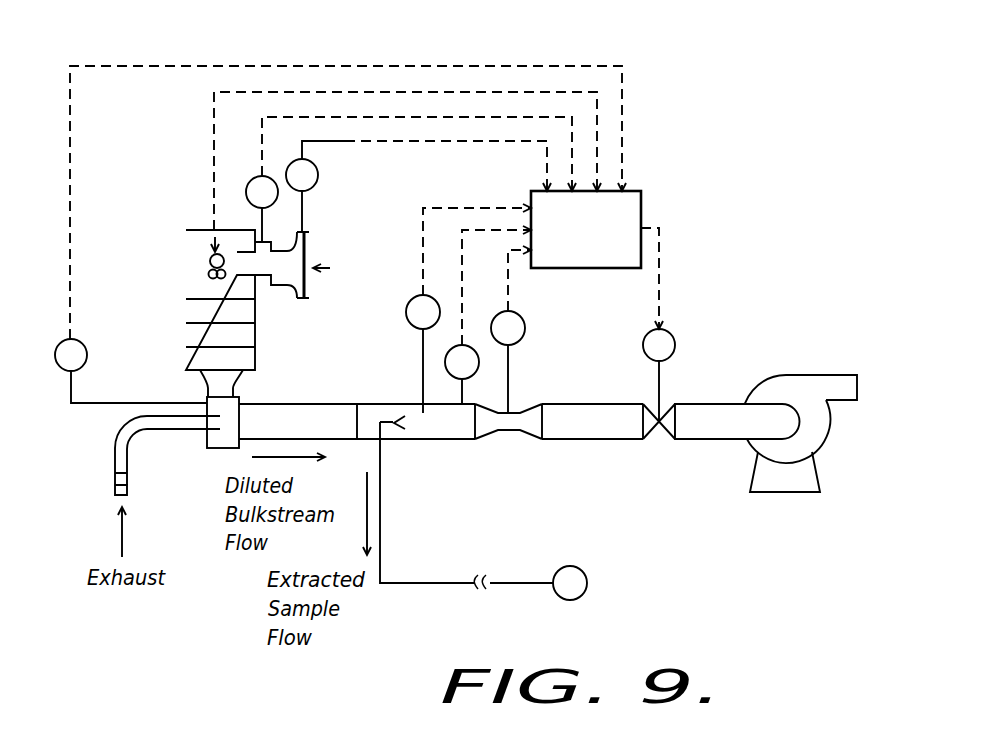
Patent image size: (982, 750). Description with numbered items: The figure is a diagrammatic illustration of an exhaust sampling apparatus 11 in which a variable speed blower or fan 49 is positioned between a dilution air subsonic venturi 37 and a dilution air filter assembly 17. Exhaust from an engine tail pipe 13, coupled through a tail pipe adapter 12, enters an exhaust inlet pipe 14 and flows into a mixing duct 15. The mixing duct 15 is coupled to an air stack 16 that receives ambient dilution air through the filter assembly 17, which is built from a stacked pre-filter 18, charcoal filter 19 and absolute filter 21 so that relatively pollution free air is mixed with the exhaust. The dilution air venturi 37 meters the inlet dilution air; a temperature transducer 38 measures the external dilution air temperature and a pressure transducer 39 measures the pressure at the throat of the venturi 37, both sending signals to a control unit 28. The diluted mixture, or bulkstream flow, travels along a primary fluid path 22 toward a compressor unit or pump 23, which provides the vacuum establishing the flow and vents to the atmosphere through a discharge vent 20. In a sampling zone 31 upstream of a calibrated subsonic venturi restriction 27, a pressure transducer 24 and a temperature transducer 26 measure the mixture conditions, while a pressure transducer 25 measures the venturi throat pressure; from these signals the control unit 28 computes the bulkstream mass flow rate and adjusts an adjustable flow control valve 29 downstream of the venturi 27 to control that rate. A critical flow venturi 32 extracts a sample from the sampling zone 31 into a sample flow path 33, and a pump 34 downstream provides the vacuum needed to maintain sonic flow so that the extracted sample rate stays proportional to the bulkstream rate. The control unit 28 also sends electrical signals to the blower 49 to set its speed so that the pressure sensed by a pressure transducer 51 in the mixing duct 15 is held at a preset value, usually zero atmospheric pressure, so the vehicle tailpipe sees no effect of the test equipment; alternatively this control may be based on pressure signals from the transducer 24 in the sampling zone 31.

The apparatus for sampling and measuring emission content of exhaust 11 is at (811, 201).
The tail pipe adapter 12 is at (115, 478).
The exhaust tail pipe 13 is at (115, 492).
The exhaust inlet pipe 14 is at (140, 438).
The mixing duct 15 is at (222, 449).
The air stack 16 is at (240, 384).
The filter assembly 17 is at (266, 339).
The pre-filter 18 is at (186, 302).
The charcoal filter 19 is at (186, 335).
The discharge vent 20 is at (859, 377).
The absolute filter 21 is at (186, 361).
The primary fluid path 22 is at (338, 404).
The compressor unit or pump 23 is at (803, 482).
The pressure transducer 24 is at (474, 373).
The pressure transducer 25 is at (520, 317).
The temperature transducer 26 is at (411, 324).
The subsonic venturi restriction 27 is at (507, 451).
The control unit 28 is at (632, 203).
The adjustable flow control valve 29 is at (662, 449).
The sampling zone 31 is at (458, 441).
The critical flow venturi 32 is at (389, 440).
The sample flow path 33 is at (392, 588).
The pump 34 is at (583, 572).
The subsonic venturi restriction for dilution air 37 is at (316, 223).
The temperature transducer 38 is at (318, 174).
The pressure transducer 39 is at (251, 182).
The variable speed blower or fan 49 is at (212, 257).
The pressure transducer 51 is at (61, 366).